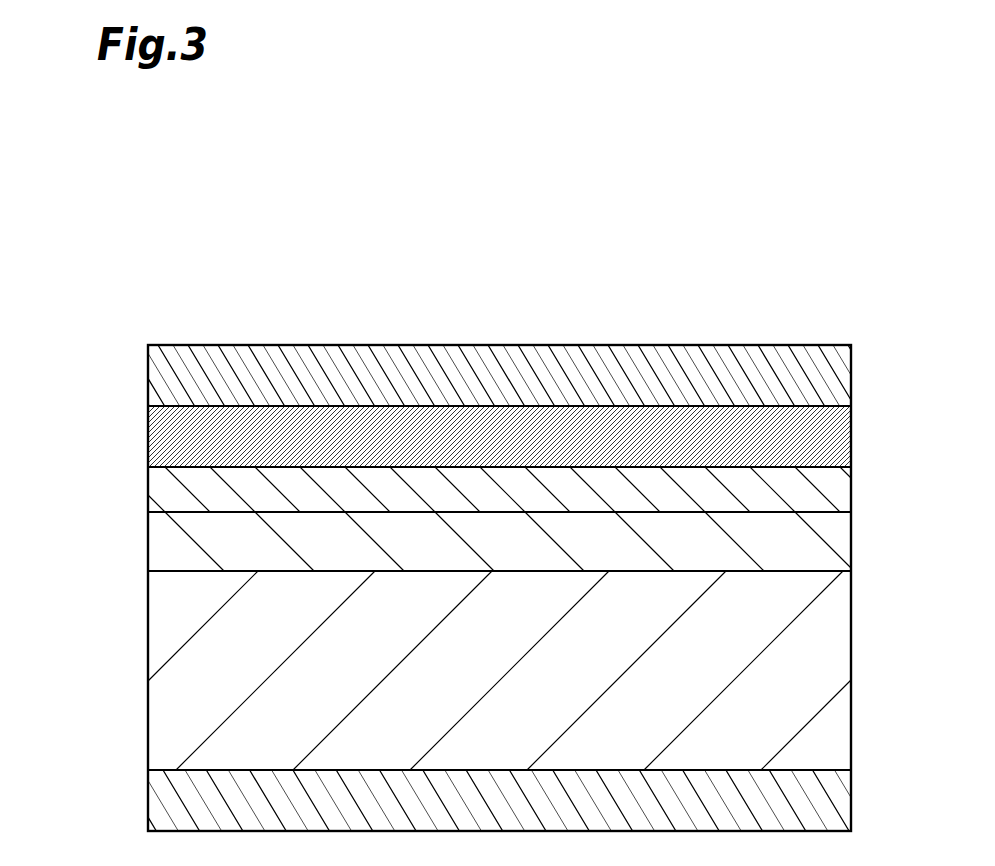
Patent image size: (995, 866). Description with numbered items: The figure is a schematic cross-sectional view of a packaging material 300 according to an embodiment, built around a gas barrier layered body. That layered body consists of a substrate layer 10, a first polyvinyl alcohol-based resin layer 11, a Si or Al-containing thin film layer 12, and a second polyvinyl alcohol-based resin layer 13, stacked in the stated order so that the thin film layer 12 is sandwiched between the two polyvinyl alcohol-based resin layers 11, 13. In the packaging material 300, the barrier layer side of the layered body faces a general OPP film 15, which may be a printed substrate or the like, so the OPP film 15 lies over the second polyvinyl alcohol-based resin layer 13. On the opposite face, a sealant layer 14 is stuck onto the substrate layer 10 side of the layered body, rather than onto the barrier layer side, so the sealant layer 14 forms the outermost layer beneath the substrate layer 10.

The packaging material 300 is at (858, 266).
The substrate layer 10 is at (836, 662).
The first polyvinyl alcohol-based resin layer 11 is at (836, 547).
The Si or Al-containing thin film layer 12 is at (836, 492).
The second polyvinyl alcohol-based resin layer 13 is at (836, 437).
The sealant layer 14 is at (836, 803).
The general OPP film 15 is at (836, 373).